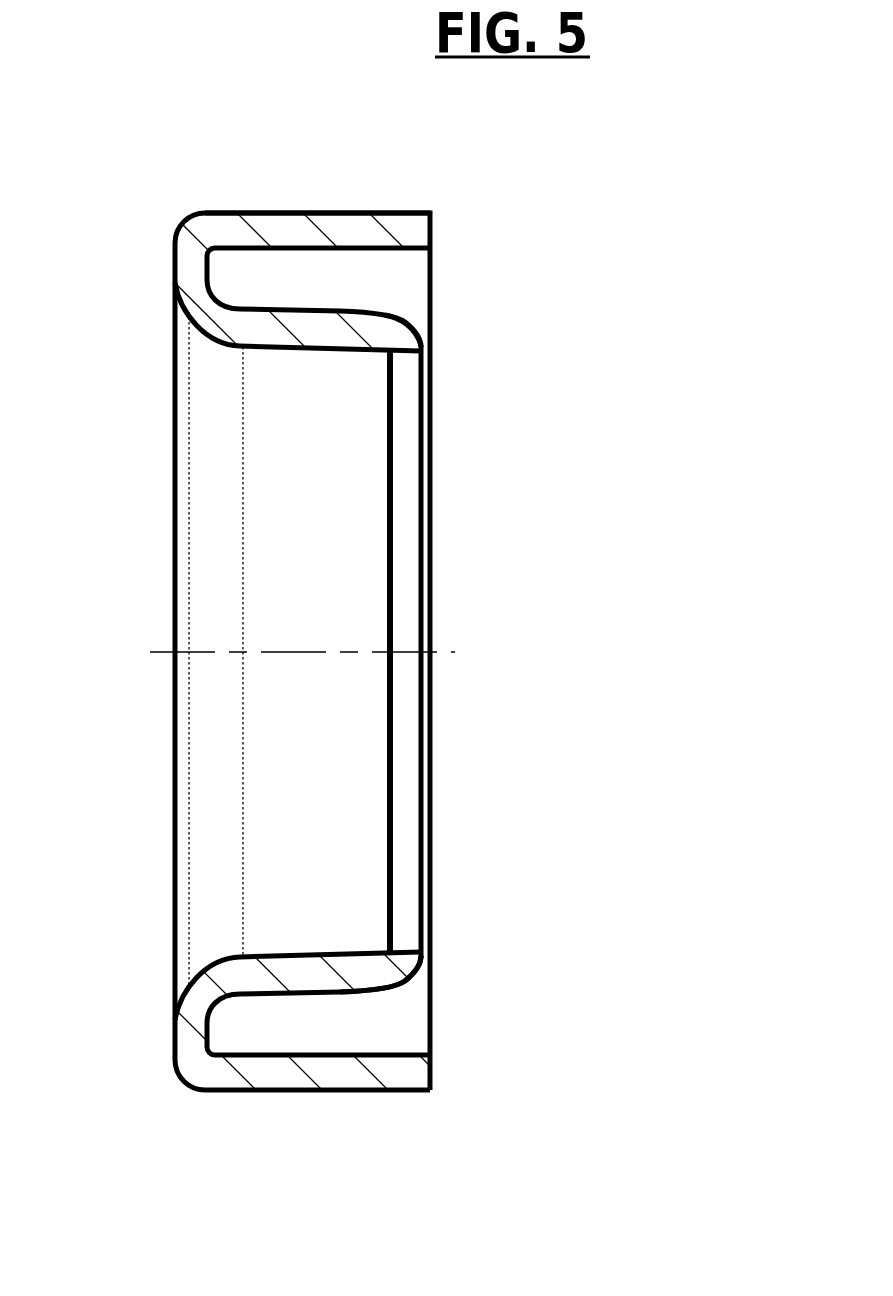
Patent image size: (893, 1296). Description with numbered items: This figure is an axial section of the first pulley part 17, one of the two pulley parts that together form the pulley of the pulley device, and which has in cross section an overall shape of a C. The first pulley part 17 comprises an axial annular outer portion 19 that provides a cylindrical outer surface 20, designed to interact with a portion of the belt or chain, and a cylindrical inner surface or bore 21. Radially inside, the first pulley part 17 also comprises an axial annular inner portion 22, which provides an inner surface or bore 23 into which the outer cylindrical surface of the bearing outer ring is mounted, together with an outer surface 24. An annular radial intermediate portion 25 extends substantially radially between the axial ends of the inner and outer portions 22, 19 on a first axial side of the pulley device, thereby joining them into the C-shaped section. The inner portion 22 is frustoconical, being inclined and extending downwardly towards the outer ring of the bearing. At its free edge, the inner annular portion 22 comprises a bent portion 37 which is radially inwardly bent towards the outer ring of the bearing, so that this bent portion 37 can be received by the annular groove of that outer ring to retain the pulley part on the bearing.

The first pulley part 17 is at (209, 186).
The axial annular outer portion 19 is at (276, 240).
The annular radial intermediate portion 25 is at (190, 276).
The axial annular inner portion 22 is at (317, 342).
The bent portion 37 is at (399, 342).
The inner surface or bore 23 is at (297, 950).
The outer surface 24 is at (362, 992).
The cylindrical inner surface or bore 21 is at (303, 1052).
The cylindrical outer surface 20 is at (343, 1092).